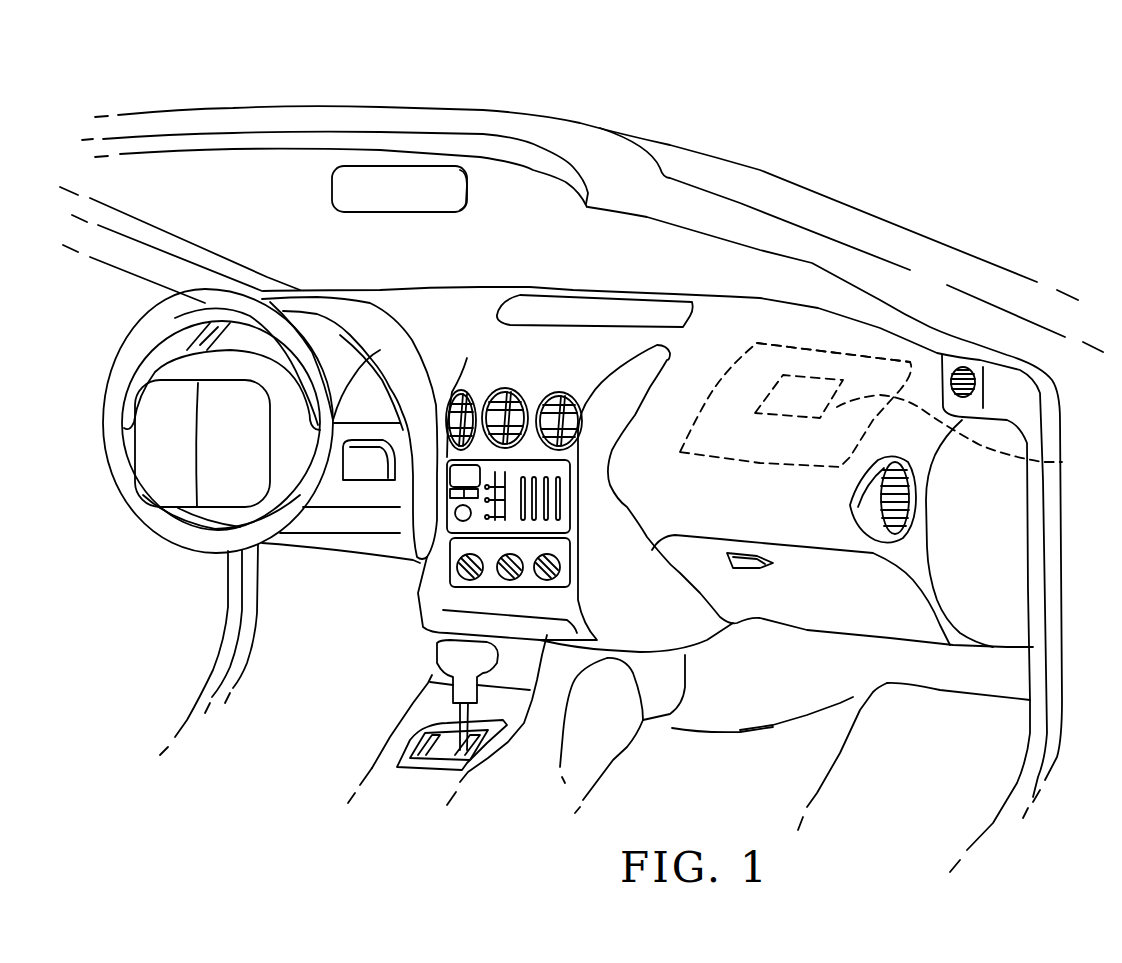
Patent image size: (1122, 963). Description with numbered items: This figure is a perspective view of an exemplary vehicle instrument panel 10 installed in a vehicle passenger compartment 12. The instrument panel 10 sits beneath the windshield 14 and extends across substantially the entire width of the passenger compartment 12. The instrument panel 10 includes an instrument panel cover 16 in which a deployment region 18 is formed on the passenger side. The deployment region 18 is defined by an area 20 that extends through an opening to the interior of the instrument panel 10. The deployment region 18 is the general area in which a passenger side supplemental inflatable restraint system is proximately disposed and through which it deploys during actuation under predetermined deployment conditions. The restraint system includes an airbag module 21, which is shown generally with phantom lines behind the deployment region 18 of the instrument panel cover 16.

The instrument panel 10 is at (715, 315).
The vehicle passenger compartment 12 is at (160, 592).
The windshield 14 is at (532, 225).
The instrument panel cover 16 is at (1062, 462).
The deployment region 18 is at (772, 352).
The area 20 is at (806, 348).
The airbag module 21 is at (823, 377).